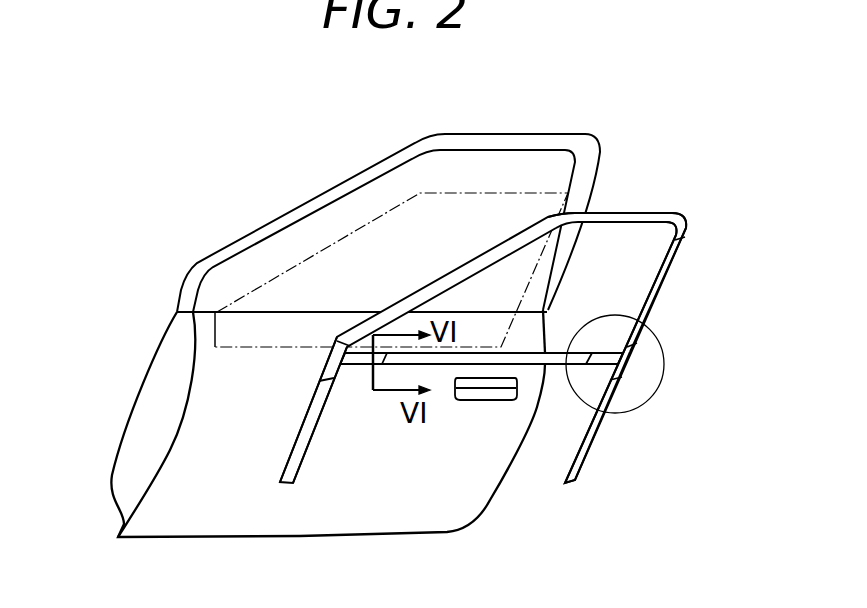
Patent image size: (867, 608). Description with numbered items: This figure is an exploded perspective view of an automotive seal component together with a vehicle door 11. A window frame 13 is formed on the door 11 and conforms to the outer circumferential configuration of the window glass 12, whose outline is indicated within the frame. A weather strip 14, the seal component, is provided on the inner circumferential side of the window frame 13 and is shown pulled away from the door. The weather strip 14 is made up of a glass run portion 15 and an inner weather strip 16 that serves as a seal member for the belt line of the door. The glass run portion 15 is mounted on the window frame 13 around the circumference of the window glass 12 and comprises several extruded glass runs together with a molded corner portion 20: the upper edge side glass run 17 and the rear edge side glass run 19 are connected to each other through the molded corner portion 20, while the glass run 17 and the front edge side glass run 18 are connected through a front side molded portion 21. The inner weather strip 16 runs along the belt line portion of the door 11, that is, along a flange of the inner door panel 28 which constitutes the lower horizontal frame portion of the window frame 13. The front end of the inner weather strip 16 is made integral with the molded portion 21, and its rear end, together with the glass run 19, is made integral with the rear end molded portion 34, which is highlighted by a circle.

The door 11 is at (386, 521).
The window glass 12 is at (317, 253).
The window frame 13 is at (503, 134).
The weather strip 14 is at (500, 313).
The glass run portion 15 is at (669, 276).
The inner weather strip 16 is at (523, 367).
The upper edge side glass run 17 is at (632, 212).
The front edge side glass run 18 is at (294, 443).
The rear edge side glass run 19 is at (587, 445).
The molded corner portion 20 is at (690, 216).
The front side molded portion 21 is at (327, 360).
The inner door panel 28 is at (117, 447).
The molded portion 34 is at (628, 365).